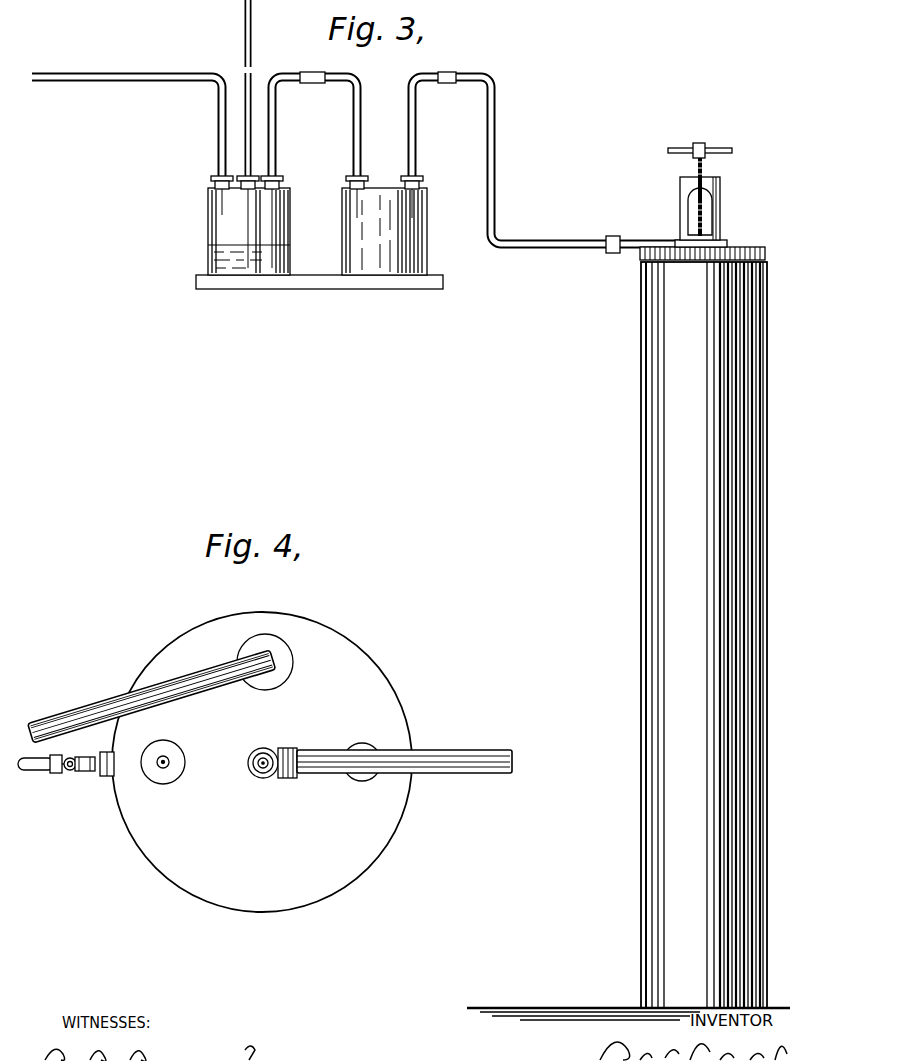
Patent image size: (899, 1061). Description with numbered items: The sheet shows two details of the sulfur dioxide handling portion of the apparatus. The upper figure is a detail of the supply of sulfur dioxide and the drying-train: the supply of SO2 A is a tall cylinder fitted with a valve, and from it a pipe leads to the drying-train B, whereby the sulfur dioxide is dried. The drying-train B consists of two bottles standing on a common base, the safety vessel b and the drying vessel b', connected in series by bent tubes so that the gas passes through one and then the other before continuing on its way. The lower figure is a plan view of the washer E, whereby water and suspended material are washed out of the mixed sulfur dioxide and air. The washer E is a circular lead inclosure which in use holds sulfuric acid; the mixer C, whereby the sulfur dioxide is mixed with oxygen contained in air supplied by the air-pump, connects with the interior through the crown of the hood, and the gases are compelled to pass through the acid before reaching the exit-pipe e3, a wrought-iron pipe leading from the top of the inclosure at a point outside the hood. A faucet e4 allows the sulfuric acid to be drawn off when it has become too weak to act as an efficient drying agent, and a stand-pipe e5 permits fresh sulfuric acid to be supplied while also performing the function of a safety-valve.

In FIG. 3, the supply of SO2 A is at (628, 581).
In FIG. 3, the drying-train B is at (319, 250).
In FIG. 3, the safety vessel b is at (384, 225).
In FIG. 3, the drying vessel b' is at (249, 225).
In FIG. 4, the mixer C is at (256, 750).
In FIG. 4, the washer E is at (262, 762).
In FIG. 4, the exit-pipe e3 is at (272, 662).
In FIG. 4, the faucet e4 is at (66, 774).
In FIG. 4, the stand-pipe e5 is at (169, 760).